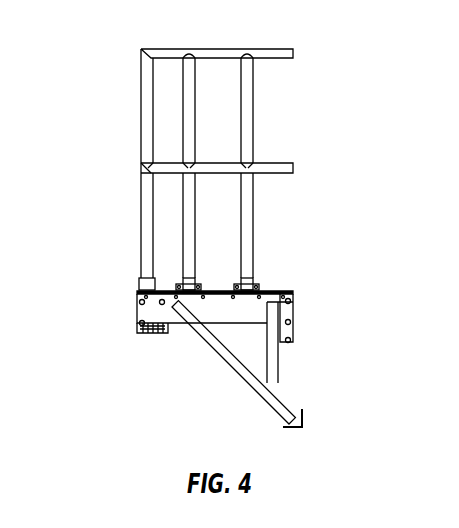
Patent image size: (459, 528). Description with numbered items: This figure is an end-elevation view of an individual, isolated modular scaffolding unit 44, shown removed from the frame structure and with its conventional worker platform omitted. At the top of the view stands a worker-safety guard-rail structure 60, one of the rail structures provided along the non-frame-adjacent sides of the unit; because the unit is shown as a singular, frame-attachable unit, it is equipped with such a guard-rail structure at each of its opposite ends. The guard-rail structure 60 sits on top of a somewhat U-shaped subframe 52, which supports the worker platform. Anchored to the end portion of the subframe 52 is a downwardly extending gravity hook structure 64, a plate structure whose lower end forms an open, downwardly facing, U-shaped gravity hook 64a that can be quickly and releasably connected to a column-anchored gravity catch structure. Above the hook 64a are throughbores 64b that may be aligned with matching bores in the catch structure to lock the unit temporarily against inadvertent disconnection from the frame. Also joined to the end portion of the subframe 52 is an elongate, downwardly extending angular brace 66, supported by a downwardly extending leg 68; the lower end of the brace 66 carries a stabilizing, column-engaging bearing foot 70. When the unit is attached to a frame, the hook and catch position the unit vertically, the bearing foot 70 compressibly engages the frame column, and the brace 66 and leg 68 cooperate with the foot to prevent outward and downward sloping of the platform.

The scaffolding unit 44 is at (104, 68).
The guard-rail structure 60 is at (217, 54).
The subframe 52 is at (193, 320).
The gravity hook structure 64 is at (308, 333).
The gravity hook 64a is at (289, 343).
The throughbores 64b is at (291, 321).
The angular brace 66 is at (235, 365).
The leg 68 is at (273, 378).
The bearing foot 70 is at (293, 430).